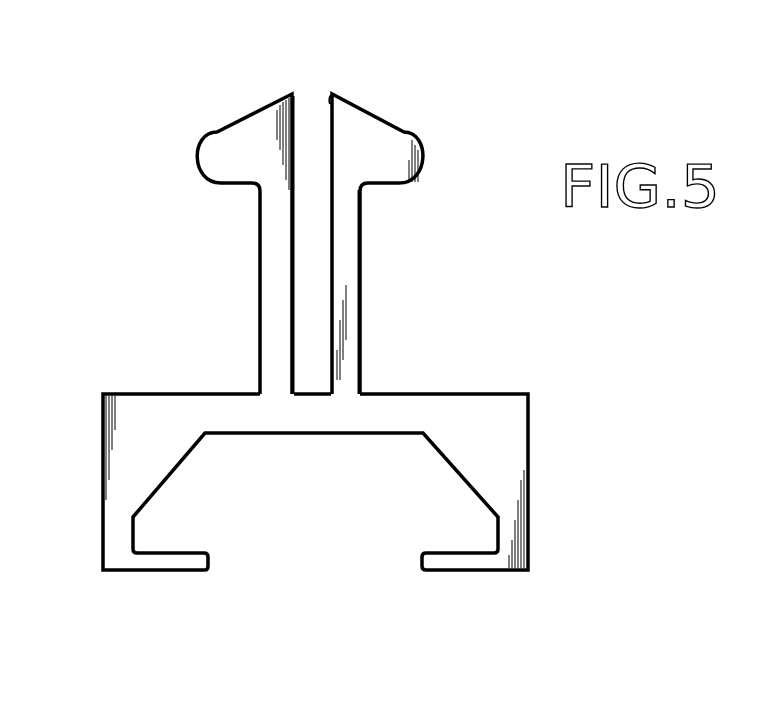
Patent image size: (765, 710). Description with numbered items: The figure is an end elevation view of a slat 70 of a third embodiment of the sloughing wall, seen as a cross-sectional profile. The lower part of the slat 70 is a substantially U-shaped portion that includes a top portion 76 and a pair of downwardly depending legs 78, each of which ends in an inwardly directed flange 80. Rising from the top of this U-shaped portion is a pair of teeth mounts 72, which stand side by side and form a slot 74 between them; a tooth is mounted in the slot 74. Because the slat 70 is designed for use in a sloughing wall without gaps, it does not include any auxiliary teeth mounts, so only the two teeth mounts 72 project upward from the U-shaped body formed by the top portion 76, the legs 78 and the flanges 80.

The slat 70 is at (115, 246).
The teeth mounts 72 is at (259, 224).
The slot 74 is at (327, 103).
The top portion 76 is at (307, 420).
The downwardly depending legs 78 is at (113, 458).
The inwardly directed flange 80 is at (197, 563).